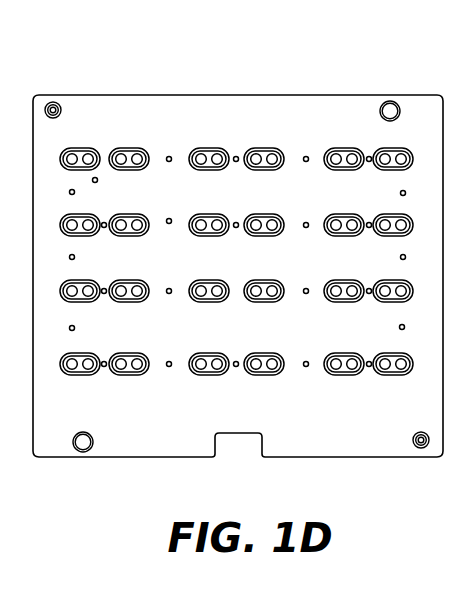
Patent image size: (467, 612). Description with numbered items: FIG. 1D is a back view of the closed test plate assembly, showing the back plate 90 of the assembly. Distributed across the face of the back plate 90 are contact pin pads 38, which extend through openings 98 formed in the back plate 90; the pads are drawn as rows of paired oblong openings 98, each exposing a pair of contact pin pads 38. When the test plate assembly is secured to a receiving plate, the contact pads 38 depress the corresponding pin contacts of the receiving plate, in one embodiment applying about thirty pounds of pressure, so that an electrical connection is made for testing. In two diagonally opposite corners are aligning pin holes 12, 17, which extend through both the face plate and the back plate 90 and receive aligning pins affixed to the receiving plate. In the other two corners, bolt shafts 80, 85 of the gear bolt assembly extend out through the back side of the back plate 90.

The back plate 90 is at (127, 132).
The openings 98 is at (368, 372).
The contact pin pads 38 is at (401, 371).
The bolt shaft 80 is at (48, 103).
The aligning pin hole 17 is at (398, 105).
The aligning pin hole 12 is at (86, 452).
The bolt shaft 85 is at (421, 449).